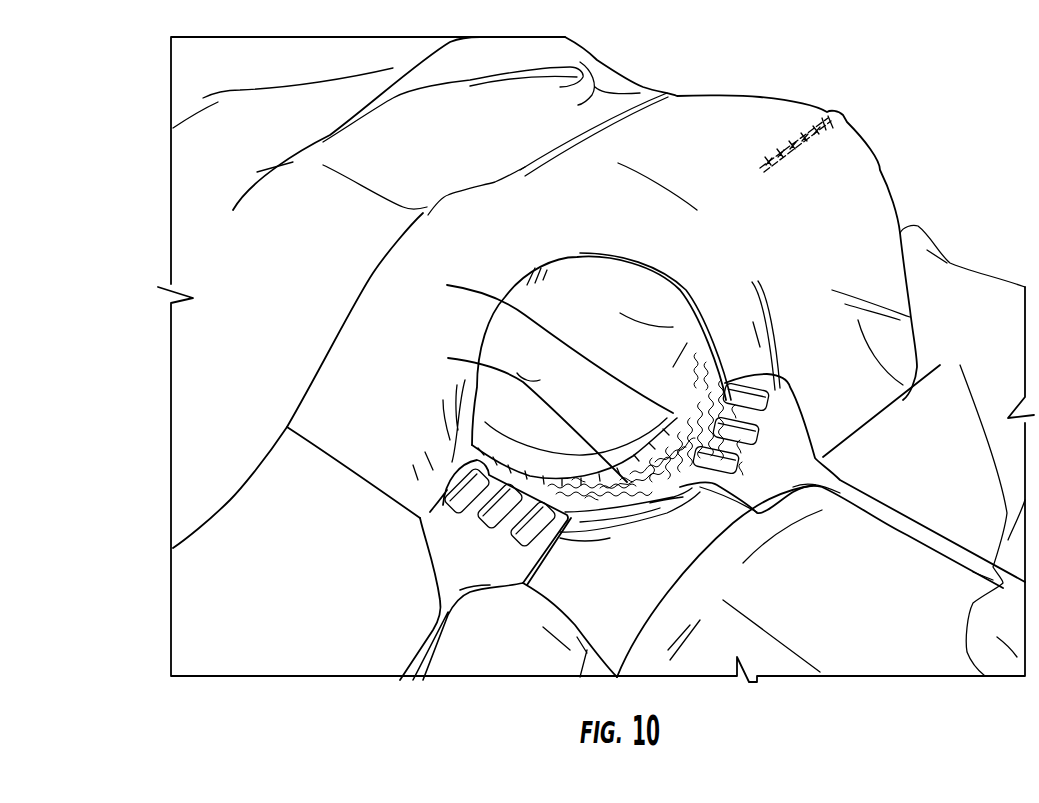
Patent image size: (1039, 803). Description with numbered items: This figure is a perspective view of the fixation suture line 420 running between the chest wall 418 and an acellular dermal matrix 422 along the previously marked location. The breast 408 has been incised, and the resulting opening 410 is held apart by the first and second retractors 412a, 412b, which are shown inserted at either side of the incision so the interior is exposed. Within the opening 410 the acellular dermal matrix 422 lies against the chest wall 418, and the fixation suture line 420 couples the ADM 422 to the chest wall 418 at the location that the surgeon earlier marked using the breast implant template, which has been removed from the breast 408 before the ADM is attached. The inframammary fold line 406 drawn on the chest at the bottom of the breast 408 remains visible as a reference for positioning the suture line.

The inframammary fold line 406 is at (767, 297).
The breast 408 is at (727, 288).
The opening 410 is at (675, 280).
The first retractor 412a is at (792, 402).
The second retractor 412b is at (443, 512).
The chest wall 418 is at (521, 412).
The fixation suture line 420 is at (544, 343).
The acellular dermal matrix 422 is at (583, 300).